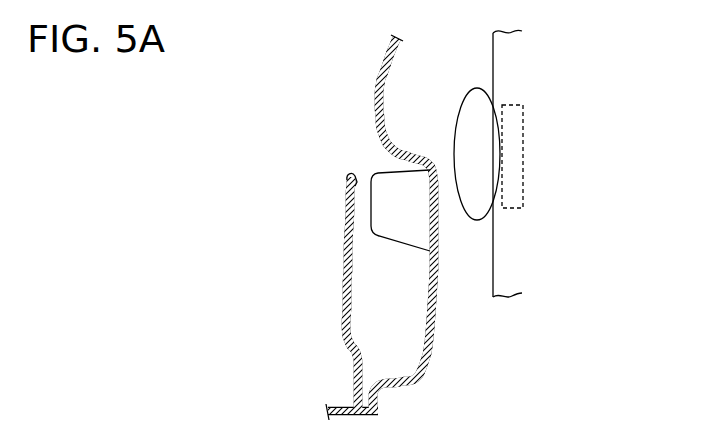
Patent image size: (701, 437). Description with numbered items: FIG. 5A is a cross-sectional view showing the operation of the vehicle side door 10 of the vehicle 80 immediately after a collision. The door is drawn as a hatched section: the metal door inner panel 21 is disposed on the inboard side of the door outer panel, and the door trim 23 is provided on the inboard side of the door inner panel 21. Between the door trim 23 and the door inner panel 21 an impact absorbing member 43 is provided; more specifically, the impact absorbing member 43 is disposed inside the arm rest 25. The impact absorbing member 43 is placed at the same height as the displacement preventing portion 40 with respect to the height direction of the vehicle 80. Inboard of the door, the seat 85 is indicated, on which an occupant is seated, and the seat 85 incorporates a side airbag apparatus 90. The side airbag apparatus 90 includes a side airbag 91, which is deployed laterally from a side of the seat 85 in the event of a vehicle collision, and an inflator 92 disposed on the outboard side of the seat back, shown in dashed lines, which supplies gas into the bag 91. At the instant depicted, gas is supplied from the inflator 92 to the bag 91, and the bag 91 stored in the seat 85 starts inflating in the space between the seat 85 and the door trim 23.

The vehicle 80 is at (266, 80).
The vehicle side door 10 is at (310, 150).
The door inner panel 21 is at (330, 300).
The door trim 23 is at (447, 308).
The arm rest 25 is at (430, 157).
The displacement preventing portion 40 is at (348, 205).
The impact absorbing member 43 is at (378, 170).
The seat 85 is at (489, 50).
The side airbag apparatus 90 is at (560, 83).
The side airbag 91 is at (466, 88).
The inflator 92 is at (524, 157).